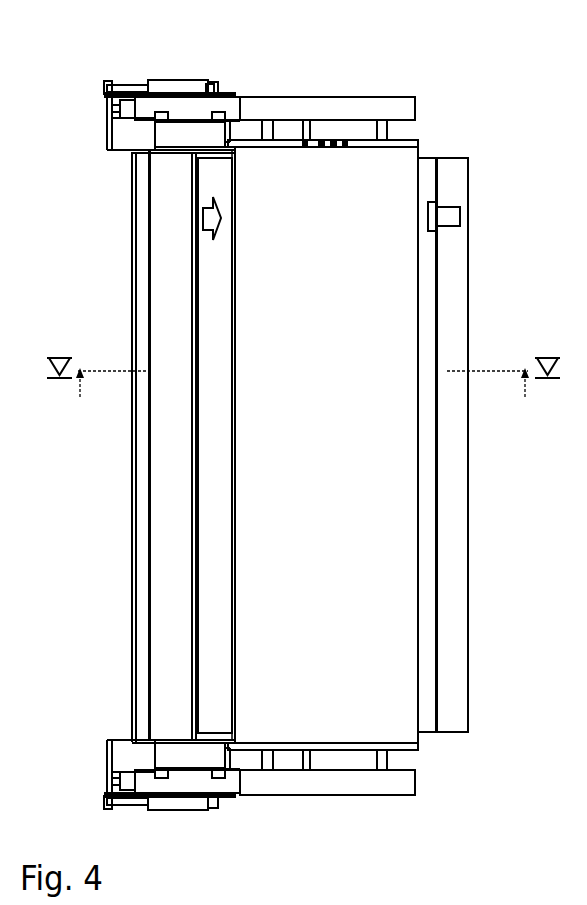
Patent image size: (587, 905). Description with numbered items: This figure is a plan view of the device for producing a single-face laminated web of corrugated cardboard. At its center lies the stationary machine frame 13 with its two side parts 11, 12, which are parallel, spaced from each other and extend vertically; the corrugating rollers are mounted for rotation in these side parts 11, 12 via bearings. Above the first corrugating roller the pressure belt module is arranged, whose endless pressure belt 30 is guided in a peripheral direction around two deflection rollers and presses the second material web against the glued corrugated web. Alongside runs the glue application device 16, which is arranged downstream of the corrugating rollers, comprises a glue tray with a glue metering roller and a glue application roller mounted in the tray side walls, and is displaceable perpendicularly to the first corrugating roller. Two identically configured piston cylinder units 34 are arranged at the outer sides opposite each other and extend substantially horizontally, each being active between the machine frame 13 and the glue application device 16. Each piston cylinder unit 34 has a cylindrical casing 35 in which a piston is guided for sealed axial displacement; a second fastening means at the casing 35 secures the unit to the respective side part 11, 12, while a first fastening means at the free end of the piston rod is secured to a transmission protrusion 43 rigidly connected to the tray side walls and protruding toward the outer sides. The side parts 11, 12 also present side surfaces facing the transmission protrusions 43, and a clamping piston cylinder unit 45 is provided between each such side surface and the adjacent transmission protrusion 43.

The side part 11 is at (403, 97).
The side part 12 is at (393, 788).
The machine frame 13 is at (357, 88).
The glue application device 16 is at (130, 236).
The endless pressure belt 30 is at (323, 165).
The piston cylinder unit 34 is at (176, 70).
The cylindrical casing 35 is at (204, 86).
The transmission protrusion 43 is at (120, 108).
The clamping piston cylinder unit 45 is at (118, 130).